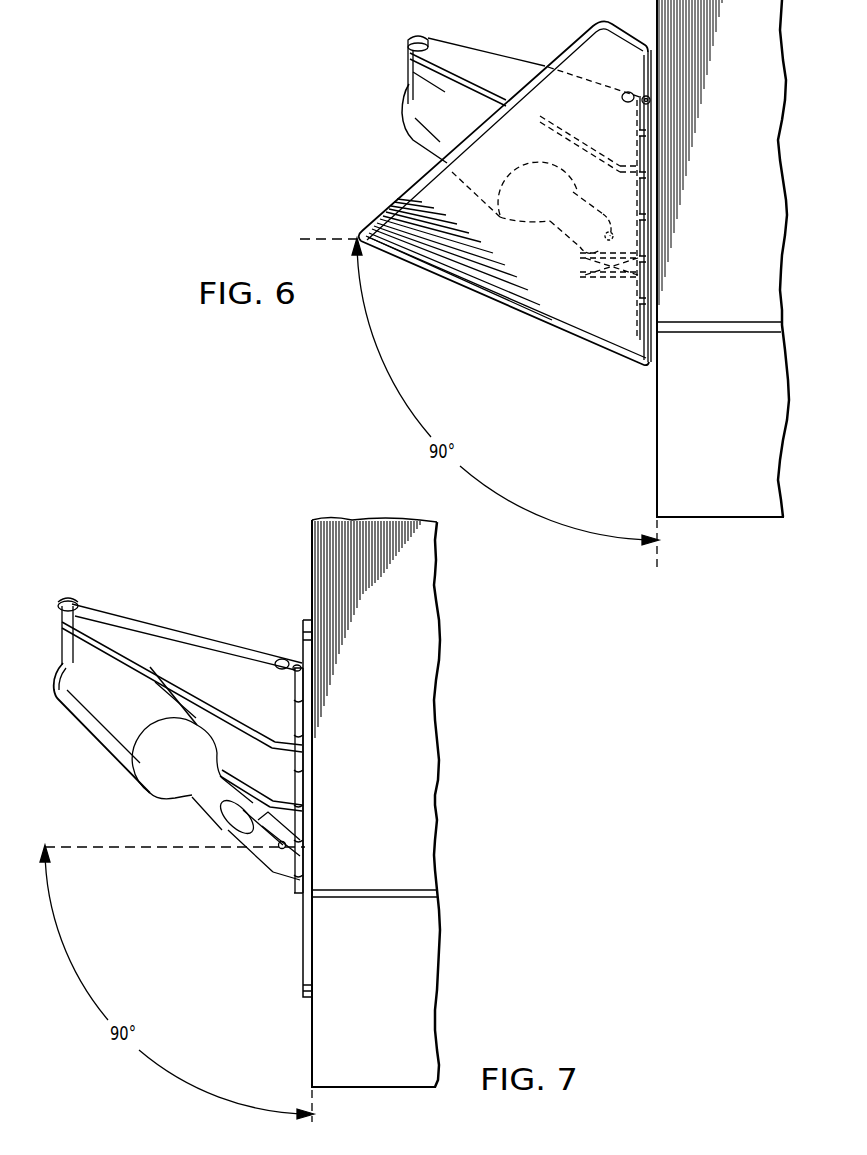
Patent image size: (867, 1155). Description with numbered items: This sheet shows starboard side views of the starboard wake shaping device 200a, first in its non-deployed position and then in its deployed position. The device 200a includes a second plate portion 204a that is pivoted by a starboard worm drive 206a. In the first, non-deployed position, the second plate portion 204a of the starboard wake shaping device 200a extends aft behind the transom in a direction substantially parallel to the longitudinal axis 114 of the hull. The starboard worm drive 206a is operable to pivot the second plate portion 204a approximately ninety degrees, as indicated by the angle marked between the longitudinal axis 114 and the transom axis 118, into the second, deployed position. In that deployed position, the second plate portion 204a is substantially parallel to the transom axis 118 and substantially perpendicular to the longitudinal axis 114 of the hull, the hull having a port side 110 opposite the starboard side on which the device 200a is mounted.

In FIG. 6, the port side 110 is at (758, 218).
In FIG. 7, the port side 110 is at (412, 790).
In FIG. 6, the longitudinal axis 114 is at (305, 237).
In FIG. 7, the longitudinal axis 114 is at (120, 845).
In FIG. 6, the transom axis 118 is at (660, 545).
In FIG. 7, the transom axis 118 is at (314, 1095).
In FIG. 6, the starboard wake shaping device 200a is at (349, 66).
In FIG. 7, the starboard wake shaping device 200a is at (176, 548).
In FIG. 6, the second plate portion 204a is at (563, 322).
In FIG. 7, the second plate portion 204a is at (300, 955).
In FIG. 6, the starboard worm drive 206a is at (404, 140).
In FIG. 7, the starboard worm drive 206a is at (113, 736).